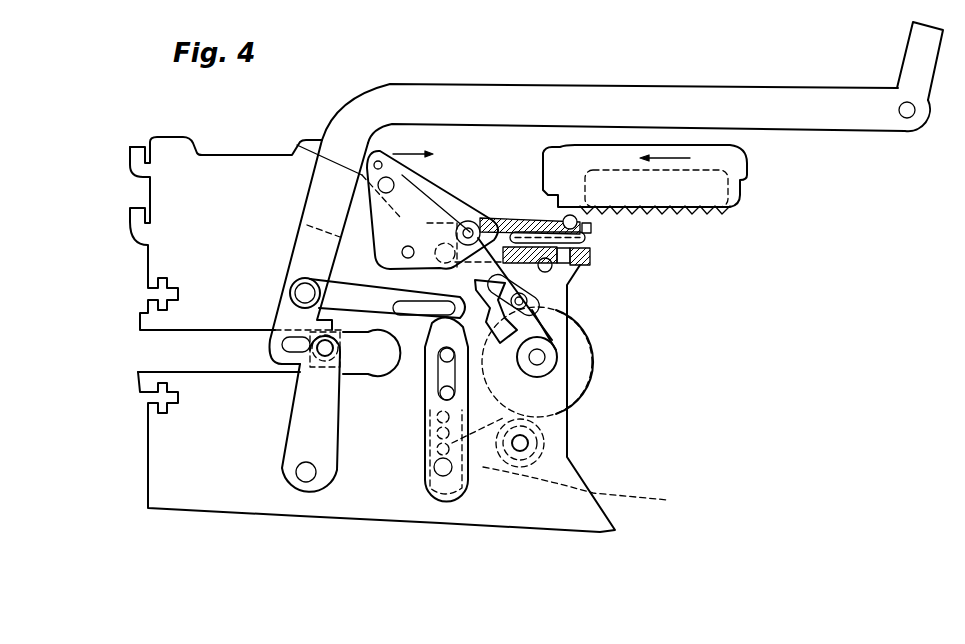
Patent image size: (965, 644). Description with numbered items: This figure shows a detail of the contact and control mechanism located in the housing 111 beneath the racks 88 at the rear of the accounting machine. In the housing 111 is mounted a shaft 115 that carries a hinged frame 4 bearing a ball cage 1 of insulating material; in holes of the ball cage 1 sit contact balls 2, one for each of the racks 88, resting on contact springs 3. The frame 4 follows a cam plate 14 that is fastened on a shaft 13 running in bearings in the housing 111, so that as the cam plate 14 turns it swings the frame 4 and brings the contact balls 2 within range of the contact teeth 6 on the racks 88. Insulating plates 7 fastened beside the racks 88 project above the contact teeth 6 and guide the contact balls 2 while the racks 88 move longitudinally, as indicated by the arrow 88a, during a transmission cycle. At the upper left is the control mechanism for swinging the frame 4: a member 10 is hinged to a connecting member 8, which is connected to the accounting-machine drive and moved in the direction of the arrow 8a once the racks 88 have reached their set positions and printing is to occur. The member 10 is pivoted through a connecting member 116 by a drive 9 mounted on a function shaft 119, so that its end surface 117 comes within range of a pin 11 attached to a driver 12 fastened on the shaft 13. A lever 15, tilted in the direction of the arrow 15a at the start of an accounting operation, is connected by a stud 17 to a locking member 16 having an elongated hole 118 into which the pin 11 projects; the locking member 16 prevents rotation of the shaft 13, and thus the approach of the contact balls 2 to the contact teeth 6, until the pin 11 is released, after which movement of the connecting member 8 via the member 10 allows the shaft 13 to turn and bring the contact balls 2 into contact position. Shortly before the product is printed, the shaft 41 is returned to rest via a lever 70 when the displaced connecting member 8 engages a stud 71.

The ball cage 1 is at (593, 257).
The contact balls 2 is at (580, 223).
The contact springs 3 is at (560, 264).
The hinged frame 4 is at (556, 277).
The contact teeth 6 is at (683, 213).
The insulating plates 7 is at (715, 213).
The connecting member 8 is at (827, 110).
The arrow 8a is at (960, 104).
The drive 9 is at (569, 466).
The member 10 is at (370, 293).
The pin 11 is at (553, 305).
The driver 12 is at (535, 333).
The shaft 13 is at (540, 362).
The cam plate 14 is at (580, 353).
The lever 15 is at (398, 217).
The arrow 15a is at (405, 152).
The locking member 16 is at (423, 208).
The stud 17 is at (362, 175).
The shaft 41 is at (300, 474).
The lever 70 is at (312, 422).
The stud 71 is at (328, 351).
The racks 88 is at (748, 180).
The arrow 88a is at (692, 160).
The housing 111 is at (208, 505).
The shaft 115 is at (447, 255).
The connecting member 116 is at (433, 357).
The end surface 117 is at (520, 345).
The elongated hole 118 is at (500, 277).
The function shaft 119 is at (527, 443).